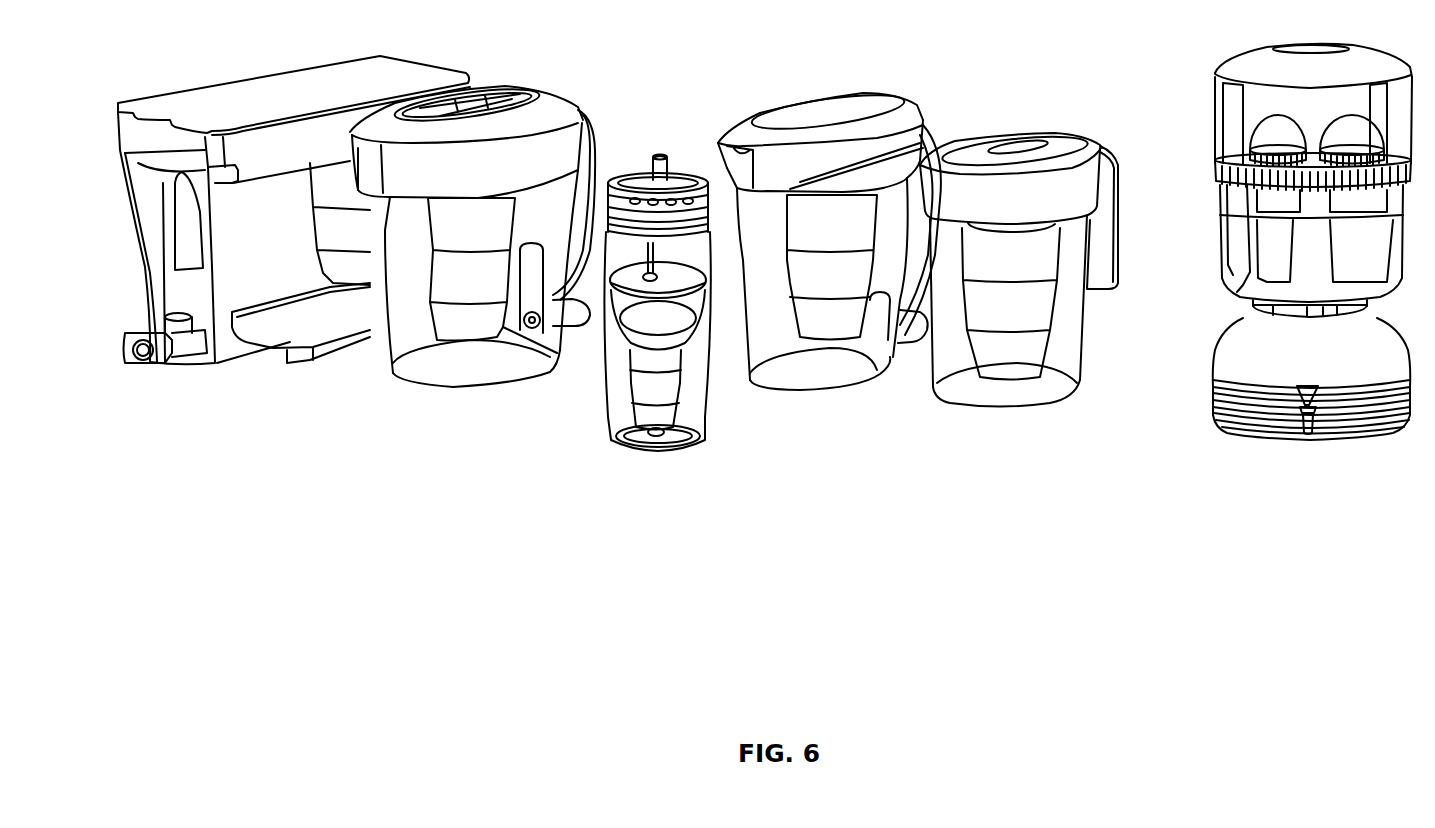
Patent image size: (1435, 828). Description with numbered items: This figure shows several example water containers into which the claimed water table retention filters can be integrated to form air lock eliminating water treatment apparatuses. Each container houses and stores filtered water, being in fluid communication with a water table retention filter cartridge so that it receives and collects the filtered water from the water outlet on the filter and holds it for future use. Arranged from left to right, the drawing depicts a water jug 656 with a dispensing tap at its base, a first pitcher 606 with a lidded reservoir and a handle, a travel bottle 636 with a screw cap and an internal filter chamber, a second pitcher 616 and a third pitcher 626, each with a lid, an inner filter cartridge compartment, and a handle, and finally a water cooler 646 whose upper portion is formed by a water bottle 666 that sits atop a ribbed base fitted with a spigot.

The water jug 656 is at (250, 443).
The pitcher 606 is at (456, 443).
The travel bottle 636 is at (657, 480).
The pitcher 616 is at (812, 446).
The pitcher 626 is at (1000, 446).
The water bottle 666 is at (1208, 200).
The water cooler 646 is at (1262, 316).